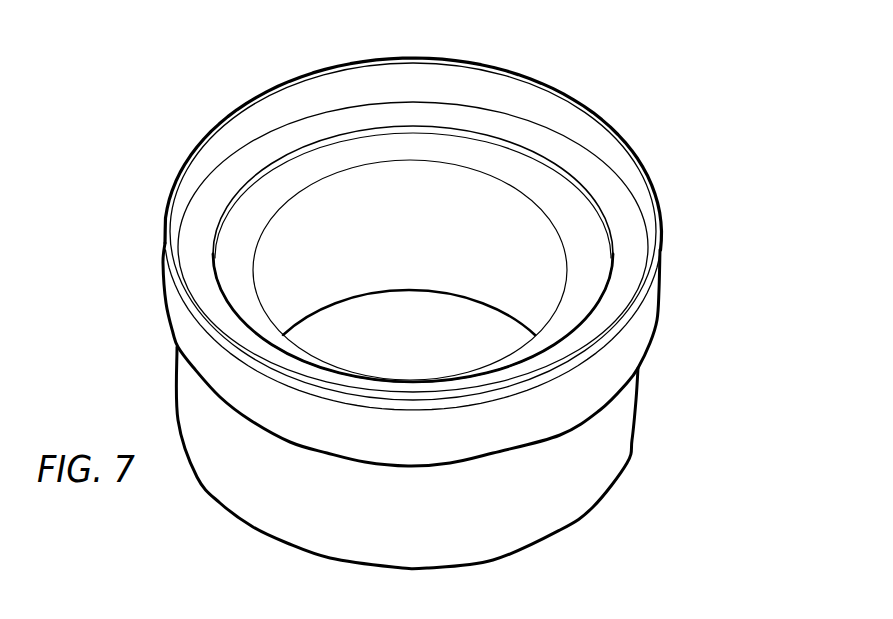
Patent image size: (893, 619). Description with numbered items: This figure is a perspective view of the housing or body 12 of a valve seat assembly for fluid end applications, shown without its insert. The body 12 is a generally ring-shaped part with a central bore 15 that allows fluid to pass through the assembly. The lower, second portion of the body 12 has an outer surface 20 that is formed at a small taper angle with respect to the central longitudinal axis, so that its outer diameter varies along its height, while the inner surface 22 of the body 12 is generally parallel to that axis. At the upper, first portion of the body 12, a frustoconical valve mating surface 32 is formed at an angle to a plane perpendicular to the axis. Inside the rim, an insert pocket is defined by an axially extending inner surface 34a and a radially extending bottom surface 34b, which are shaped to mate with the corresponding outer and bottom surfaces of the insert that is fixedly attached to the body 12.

The body 12 is at (708, 221).
The central bore 15 is at (338, 203).
The outer surface 20 is at (618, 420).
The inner surface 22 is at (276, 267).
The frustoconical valve mating surface 32 is at (610, 182).
The axially extending inner surface 34a is at (553, 157).
The radially extending bottom surface 34b is at (488, 162).